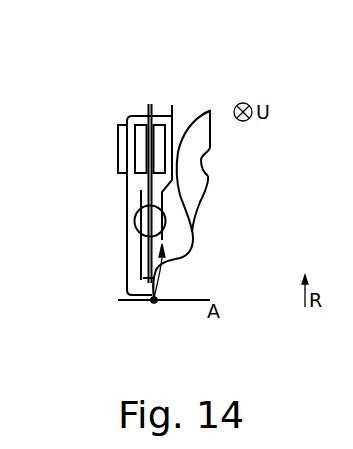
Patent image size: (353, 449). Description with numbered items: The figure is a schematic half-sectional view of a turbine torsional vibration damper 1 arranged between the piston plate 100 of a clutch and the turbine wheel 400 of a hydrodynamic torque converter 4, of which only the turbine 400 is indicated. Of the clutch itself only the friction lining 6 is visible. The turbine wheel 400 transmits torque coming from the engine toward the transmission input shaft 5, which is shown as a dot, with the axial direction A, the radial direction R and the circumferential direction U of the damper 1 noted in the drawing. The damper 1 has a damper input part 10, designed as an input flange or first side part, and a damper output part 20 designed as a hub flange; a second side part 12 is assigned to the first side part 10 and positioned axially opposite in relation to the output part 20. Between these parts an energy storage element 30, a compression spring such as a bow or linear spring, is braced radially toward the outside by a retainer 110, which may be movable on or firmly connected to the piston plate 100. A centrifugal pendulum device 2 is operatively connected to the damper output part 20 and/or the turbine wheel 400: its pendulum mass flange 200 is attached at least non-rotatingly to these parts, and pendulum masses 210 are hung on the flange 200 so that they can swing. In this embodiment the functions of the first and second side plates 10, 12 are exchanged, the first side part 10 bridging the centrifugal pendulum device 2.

The torsional vibration damper 1 is at (156, 302).
The centrifugal pendulum device 2 is at (175, 124).
The hydrodynamic torque converter 4 is at (226, 171).
The transmission input shaft 5 is at (123, 301).
The friction lining 6 is at (118, 149).
The damper input part 10 is at (197, 212).
The second side part 12 is at (148, 214).
The damper output part 20 is at (152, 226).
The energy storage element 30 is at (195, 232).
The piston plate 100 is at (127, 292).
The retainer 110 is at (138, 206).
The pendulum mass flange 200 is at (156, 124).
The pendulum masses 210 is at (172, 148).
The turbine wheel 400 is at (213, 110).